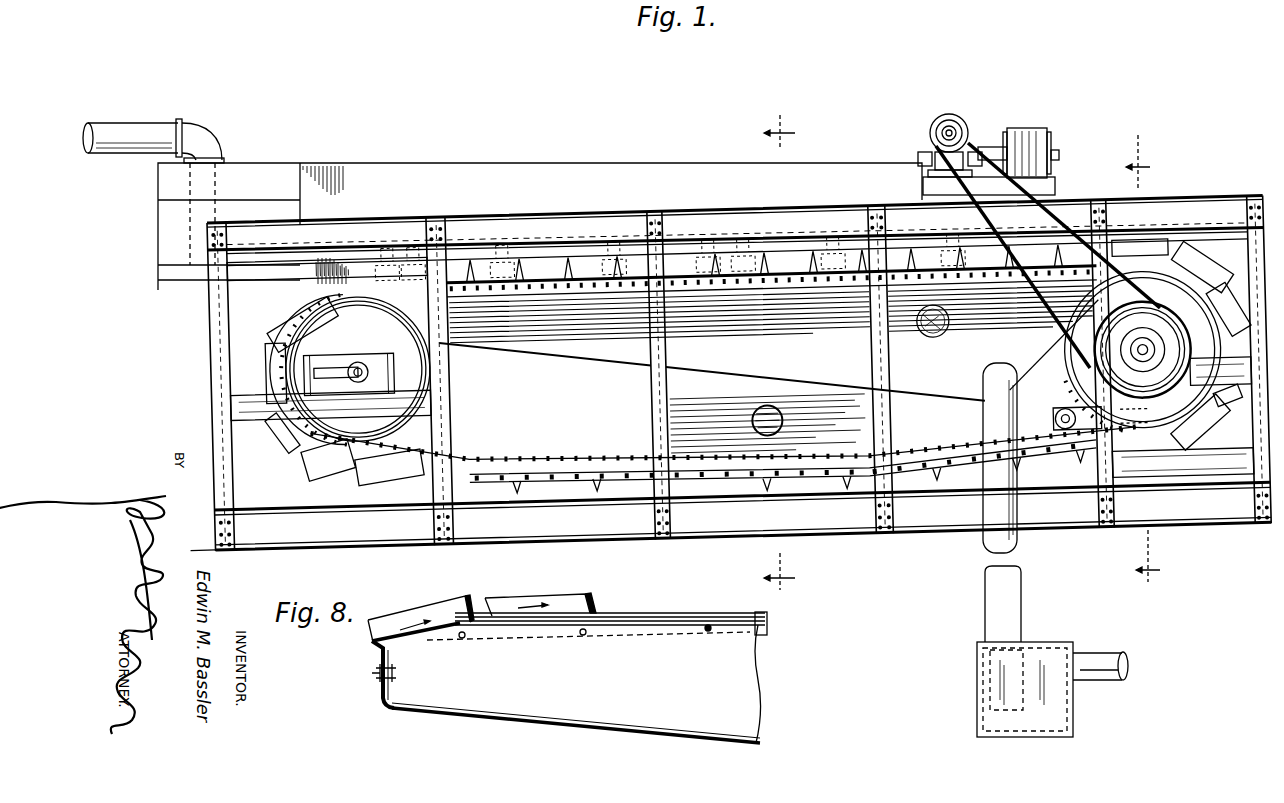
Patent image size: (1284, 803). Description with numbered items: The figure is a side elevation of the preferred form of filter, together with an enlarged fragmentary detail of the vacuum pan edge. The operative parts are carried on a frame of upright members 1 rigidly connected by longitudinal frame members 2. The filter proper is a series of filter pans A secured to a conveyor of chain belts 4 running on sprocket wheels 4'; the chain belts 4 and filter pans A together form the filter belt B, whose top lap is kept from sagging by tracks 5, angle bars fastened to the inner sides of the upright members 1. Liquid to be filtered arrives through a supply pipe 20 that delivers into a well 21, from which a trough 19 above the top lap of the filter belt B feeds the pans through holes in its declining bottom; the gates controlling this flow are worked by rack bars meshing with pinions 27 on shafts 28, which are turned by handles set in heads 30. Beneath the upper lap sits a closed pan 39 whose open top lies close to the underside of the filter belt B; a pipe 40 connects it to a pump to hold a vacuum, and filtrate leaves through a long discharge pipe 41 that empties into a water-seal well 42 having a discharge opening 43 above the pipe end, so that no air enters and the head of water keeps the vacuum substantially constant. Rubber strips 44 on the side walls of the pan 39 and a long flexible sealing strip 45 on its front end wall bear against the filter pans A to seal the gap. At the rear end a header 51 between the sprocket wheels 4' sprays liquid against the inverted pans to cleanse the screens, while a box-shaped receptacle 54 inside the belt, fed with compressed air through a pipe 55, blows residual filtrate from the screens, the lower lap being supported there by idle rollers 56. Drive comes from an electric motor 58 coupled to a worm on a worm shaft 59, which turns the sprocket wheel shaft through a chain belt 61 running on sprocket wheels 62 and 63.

In FIG. 1, the upright members 1 is at (739, 373).
In FIG. 1, the longitudinal frame members 2 is at (726, 372).
In FIG. 1, the chain belts 4 is at (769, 352).
In FIG. 1, the sprocket wheels 4' is at (746, 405).
In FIG. 1, the tracks 5 is at (1145, 358).
In FIG. 1, the trough 19 is at (504, 163).
In FIG. 1, the supply pipe 20 is at (133, 130).
In FIG. 1, the well 21 is at (243, 161).
In FIG. 1, the pinions 27 is at (659, 245).
In FIG. 1, the shafts 28 is at (737, 244).
In FIG. 1, the heads 30 is at (620, 224).
In FIG. 8, the pan 39 is at (566, 683).
In FIG. 1, the pipe 40 is at (942, 332).
In FIG. 1, the discharge pipe 41 is at (1022, 604).
In FIG. 1, the well 42 is at (1058, 645).
In FIG. 1, the discharge opening 43 is at (1104, 682).
In FIG. 8, the strips of rubber 44 is at (771, 622).
In FIG. 1, the sealing strip 45 is at (330, 369).
In FIG. 8, the sealing strip 45 is at (393, 656).
In FIG. 1, the header 51 is at (1115, 411).
In FIG. 1, the box-shaped receptacle 54 is at (768, 423).
In FIG. 1, the pipe 55 is at (780, 427).
In FIG. 1, the idle rollers 56 is at (783, 486).
In FIG. 1, the electric motor 58 is at (1028, 128).
In FIG. 1, the worm shaft 59 is at (986, 140).
In FIG. 1, the chain belt 61 is at (1067, 228).
In FIG. 1, the sprocket wheel 62 is at (960, 118).
In FIG. 1, the sprocket wheel 63 is at (1158, 349).
In FIG. 1, the filter pans A is at (262, 238).
In FIG. 8, the filter pans A is at (412, 600).
In FIG. 1, the filter belt B is at (707, 372).